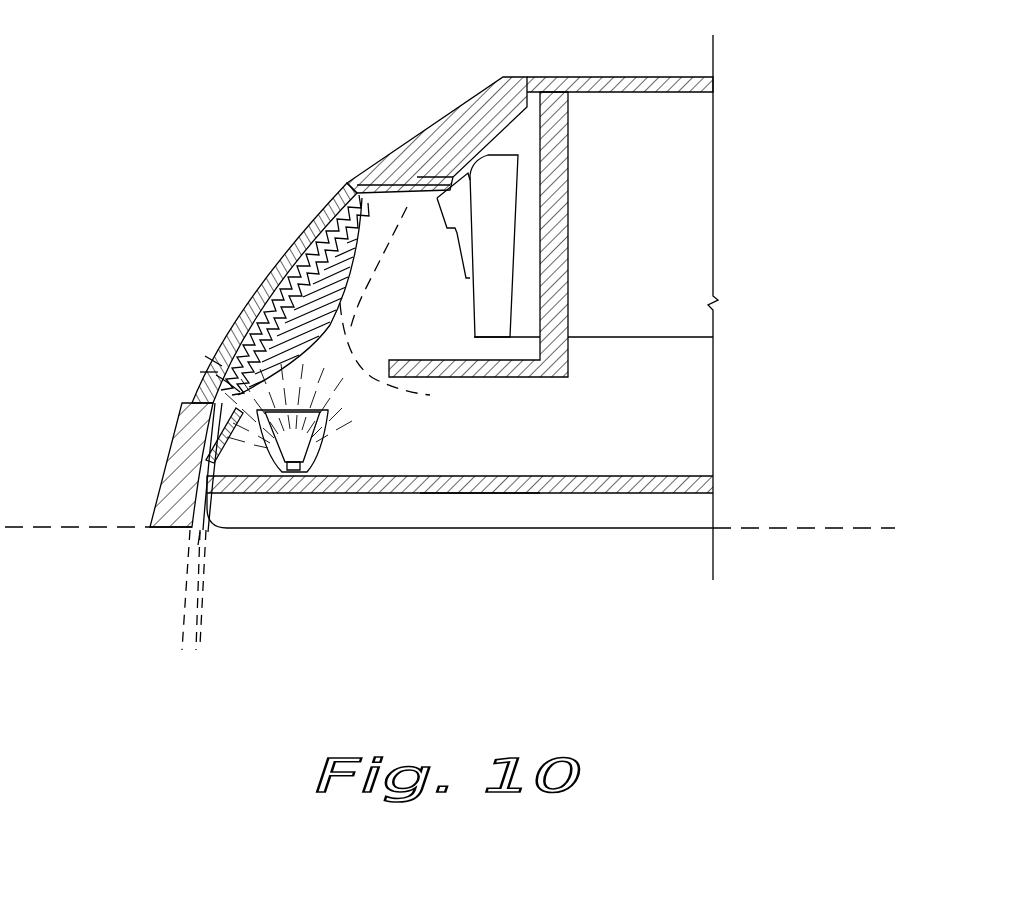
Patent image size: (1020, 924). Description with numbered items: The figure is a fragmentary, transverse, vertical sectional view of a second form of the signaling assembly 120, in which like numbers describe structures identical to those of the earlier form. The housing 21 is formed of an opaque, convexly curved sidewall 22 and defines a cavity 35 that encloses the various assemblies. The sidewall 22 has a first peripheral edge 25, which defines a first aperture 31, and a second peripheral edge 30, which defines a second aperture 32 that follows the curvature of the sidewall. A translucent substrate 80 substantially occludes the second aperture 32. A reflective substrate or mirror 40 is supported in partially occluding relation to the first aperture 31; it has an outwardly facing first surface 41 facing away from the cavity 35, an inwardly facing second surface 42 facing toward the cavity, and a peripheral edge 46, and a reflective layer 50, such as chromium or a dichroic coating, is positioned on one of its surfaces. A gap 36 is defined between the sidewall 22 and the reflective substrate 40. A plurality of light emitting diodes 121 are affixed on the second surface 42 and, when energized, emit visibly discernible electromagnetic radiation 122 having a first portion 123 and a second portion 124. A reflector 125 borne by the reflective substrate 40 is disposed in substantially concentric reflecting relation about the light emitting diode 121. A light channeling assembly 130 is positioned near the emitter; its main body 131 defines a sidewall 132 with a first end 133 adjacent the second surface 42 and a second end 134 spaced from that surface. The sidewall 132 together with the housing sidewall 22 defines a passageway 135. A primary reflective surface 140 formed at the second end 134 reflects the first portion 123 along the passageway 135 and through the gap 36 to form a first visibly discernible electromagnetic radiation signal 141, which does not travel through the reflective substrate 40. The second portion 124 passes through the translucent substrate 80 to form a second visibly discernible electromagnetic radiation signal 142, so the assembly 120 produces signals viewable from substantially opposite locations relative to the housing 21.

The housing 21 is at (587, 72).
The convexly curved sidewall 22 is at (487, 84).
The second peripheral edge 30 is at (372, 182).
The translucent substrate 80 is at (303, 233).
The second aperture 32 is at (162, 248).
The primary reflective surface 140 is at (260, 292).
The sidewall 132 is at (228, 350).
The second end 134 is at (277, 373).
The first portion 123 is at (203, 357).
The main body 131 is at (198, 374).
The passageway 135 is at (245, 436).
The reflector 125 is at (254, 455).
The first end 133 is at (152, 506).
The first peripheral edge 25 is at (165, 528).
The gap 36 is at (186, 537).
The peripheral edge 46 is at (202, 540).
The light emitting diode 121 is at (298, 475).
The first visibly discernible electromagnetic radiation signal 141 is at (178, 627).
The light channeling assembly 130 is at (215, 352).
The second visibly discernible electromagnetic radiation signal 142 is at (270, 263).
The second portion 124 is at (350, 310).
The visibly discernible electromagnetic radiation 122 is at (430, 395).
The cavity 35 is at (642, 405).
The second surface 42 is at (503, 475).
The first surface 41 is at (478, 495).
The reflective substrate 40 is at (610, 530).
The first aperture 31 is at (548, 545).
The reflective layer 50 is at (687, 475).
The signaling assembly 120 is at (722, 252).